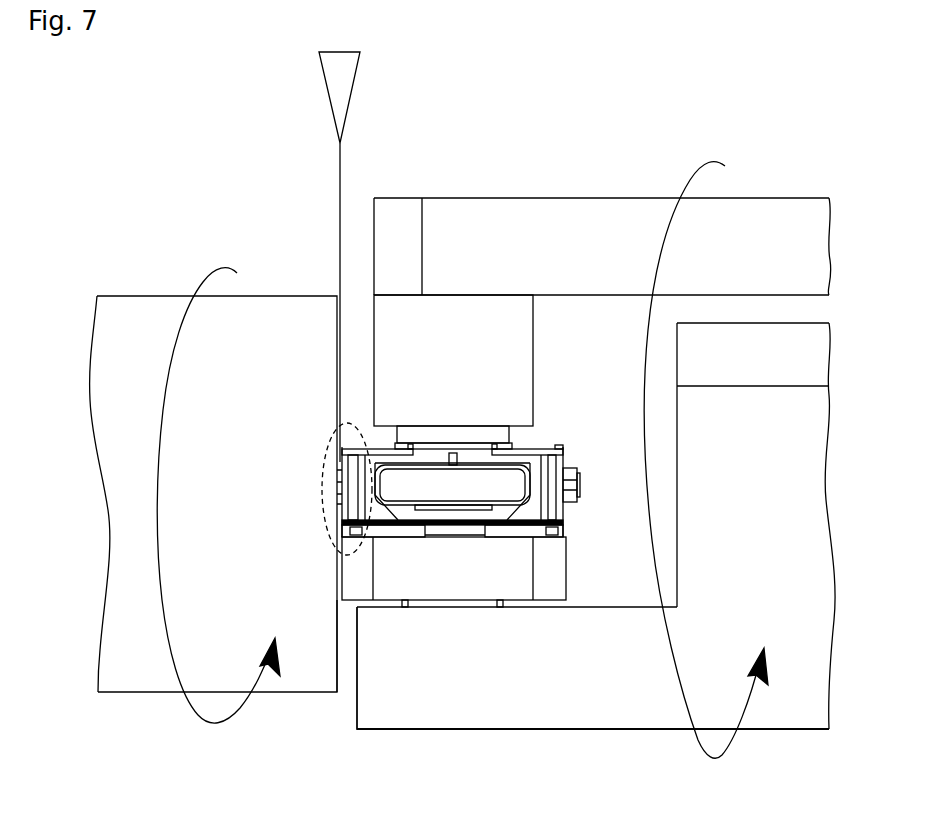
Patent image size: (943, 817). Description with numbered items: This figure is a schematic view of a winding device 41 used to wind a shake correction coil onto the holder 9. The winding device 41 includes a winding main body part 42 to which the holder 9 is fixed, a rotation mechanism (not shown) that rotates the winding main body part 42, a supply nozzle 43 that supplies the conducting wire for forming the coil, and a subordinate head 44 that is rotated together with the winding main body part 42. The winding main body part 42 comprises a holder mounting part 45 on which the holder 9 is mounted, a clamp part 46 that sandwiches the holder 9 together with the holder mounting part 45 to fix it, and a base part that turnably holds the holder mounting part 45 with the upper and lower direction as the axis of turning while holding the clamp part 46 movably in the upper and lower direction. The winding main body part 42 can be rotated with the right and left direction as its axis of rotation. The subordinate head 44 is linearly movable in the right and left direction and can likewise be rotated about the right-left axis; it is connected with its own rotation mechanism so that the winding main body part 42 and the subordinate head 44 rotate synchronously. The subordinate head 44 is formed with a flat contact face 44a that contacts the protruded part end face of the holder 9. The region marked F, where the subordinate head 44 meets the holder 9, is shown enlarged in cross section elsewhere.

The winding device 41 is at (705, 86).
The winding main body part 42 is at (497, 730).
The supply nozzle 43 is at (351, 102).
The subordinate head 44 is at (140, 692).
The contact face 44a is at (337, 655).
The holder mounting part 45 is at (566, 573).
The clamp part 46 is at (556, 198).
The holder 9 is at (533, 448).
The F part F is at (323, 432).